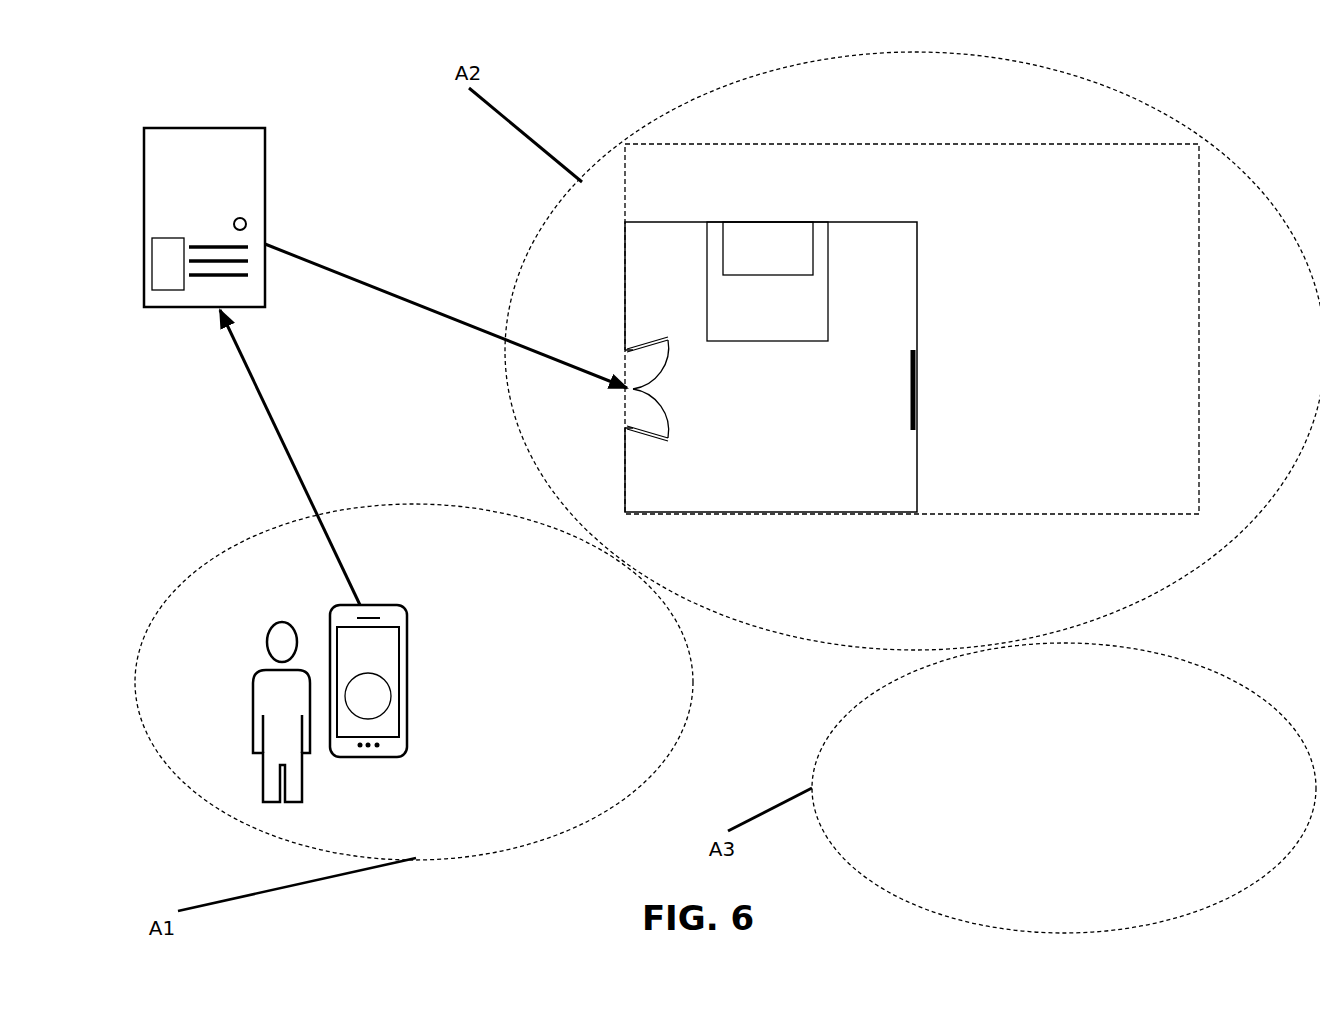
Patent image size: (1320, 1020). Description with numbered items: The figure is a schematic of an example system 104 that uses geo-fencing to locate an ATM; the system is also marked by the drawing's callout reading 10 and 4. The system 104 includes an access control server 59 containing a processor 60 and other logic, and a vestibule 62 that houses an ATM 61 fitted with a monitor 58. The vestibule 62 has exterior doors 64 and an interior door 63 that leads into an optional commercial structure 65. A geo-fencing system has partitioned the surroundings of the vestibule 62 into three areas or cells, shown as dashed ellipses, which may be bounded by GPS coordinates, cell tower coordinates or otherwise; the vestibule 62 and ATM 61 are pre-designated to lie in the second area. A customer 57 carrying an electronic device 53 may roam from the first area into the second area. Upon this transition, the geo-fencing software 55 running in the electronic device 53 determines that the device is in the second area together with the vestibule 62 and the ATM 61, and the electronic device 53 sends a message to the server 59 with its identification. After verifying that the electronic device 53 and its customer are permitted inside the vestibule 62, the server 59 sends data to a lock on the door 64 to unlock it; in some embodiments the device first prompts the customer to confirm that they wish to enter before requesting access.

The system 104 is at (1165, 44).
The secure access system 10 is at (1117, 70).
The secure access system 4 is at (1200, 55).
The electronic device 53 is at (398, 606).
The geo-fencing software 55 is at (357, 705).
The user 57 is at (273, 707).
The monitor 58 is at (757, 274).
The access control server 59 is at (218, 230).
The processor 60 is at (158, 273).
The ATM 61 is at (759, 332).
The vestibule 62 is at (759, 400).
The interior door 63 is at (920, 390).
The exterior doors 64 is at (622, 365).
The optional commercial structure 65 is at (1059, 257).